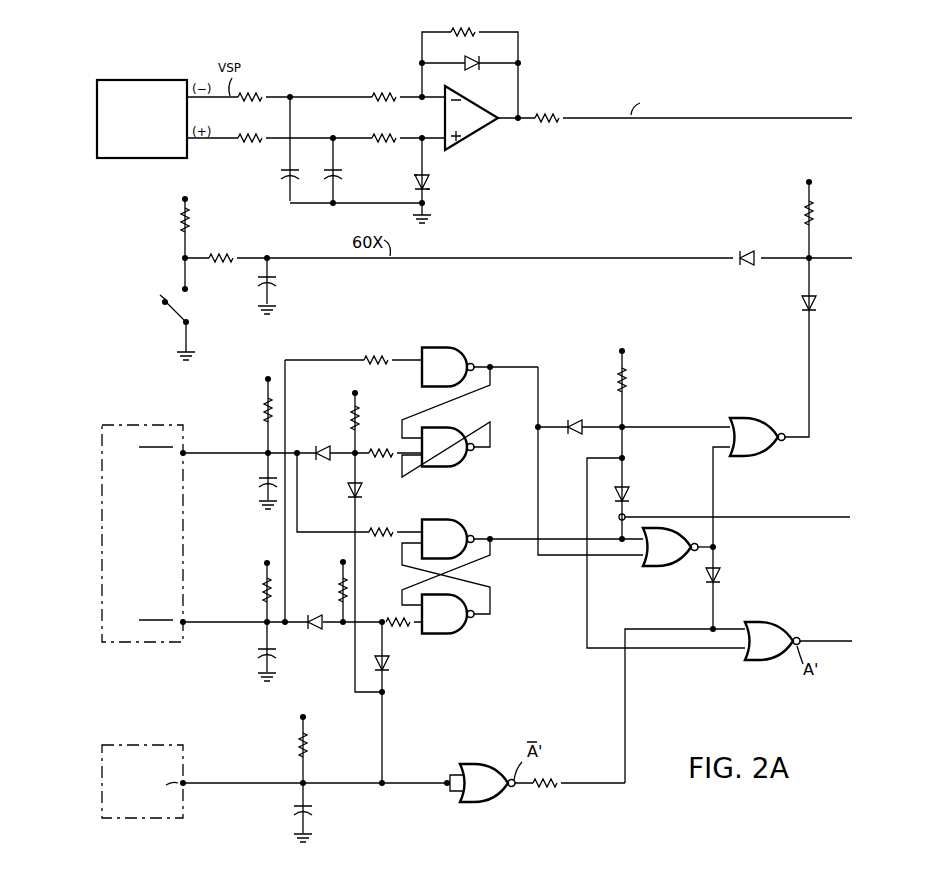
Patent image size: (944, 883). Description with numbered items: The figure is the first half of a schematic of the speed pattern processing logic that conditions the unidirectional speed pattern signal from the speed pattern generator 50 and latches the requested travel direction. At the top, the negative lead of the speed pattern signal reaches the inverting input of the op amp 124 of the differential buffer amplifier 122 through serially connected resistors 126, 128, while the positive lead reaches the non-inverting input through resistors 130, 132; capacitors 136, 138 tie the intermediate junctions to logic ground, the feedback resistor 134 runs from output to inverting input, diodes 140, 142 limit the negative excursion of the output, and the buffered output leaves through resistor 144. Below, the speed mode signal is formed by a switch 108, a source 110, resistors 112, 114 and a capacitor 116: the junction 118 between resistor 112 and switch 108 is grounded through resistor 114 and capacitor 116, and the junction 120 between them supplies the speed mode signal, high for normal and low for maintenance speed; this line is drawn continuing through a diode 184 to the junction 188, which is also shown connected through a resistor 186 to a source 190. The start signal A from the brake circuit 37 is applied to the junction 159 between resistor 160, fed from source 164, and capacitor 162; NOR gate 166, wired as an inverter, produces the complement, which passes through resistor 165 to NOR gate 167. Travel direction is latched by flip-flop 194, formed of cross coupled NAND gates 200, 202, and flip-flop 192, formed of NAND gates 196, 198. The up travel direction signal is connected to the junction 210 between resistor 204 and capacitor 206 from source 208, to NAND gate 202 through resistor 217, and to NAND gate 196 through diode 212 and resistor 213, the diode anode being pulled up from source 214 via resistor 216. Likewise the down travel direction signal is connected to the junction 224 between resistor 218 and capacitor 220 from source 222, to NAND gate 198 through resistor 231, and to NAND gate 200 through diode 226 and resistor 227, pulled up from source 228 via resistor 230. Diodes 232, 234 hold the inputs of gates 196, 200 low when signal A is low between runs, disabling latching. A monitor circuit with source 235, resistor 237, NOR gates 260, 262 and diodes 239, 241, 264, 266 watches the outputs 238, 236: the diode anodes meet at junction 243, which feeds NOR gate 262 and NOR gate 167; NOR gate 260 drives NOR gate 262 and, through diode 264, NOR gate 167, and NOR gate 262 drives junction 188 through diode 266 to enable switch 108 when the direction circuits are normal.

The brake circuit 37 is at (126, 840).
The speed pattern generator 50 is at (115, 80).
The switch 108 is at (170, 314).
The source of unidirectional potential 110 is at (184, 198).
The resistor 112 is at (190, 223).
The resistor 114 is at (222, 250).
The capacitor 116 is at (282, 284).
The junction 118 is at (183, 257).
The junction 120 is at (262, 256).
The differential buffer amplifier 122 is at (618, 86).
The operational amplifier 124 is at (476, 135).
The resistor 126 is at (248, 94).
The resistor 128 is at (401, 94).
The resistor 130 is at (252, 142).
The resistor 132 is at (404, 136).
The feedback resistor 134 is at (462, 25).
The capacitor 136 is at (283, 172).
The capacitor 138 is at (343, 170).
The diode 140 is at (431, 176).
The diode 142 is at (478, 68).
The resistor 144 is at (546, 113).
The junction 159 is at (299, 775).
The resistor 160 is at (312, 751).
The capacitor 162 is at (312, 814).
The source of unidirectional potential 164 is at (303, 717).
The resistor 165 is at (550, 792).
The NOR gate 166 is at (478, 808).
The NOR gate 167 is at (778, 627).
The diode 184 is at (752, 256).
The resistor 186 is at (815, 215).
The junction 188 is at (814, 265).
The supply terminal 190 is at (809, 182).
The flip-flop 192 is at (522, 581).
The flip-flop 194 is at (470, 402).
The NAND gate 196 is at (459, 646).
The NAND gate 198 is at (454, 520).
The NAND gate 200 is at (464, 461).
The NAND gate 202 is at (449, 348).
The resistor 204 is at (260, 588).
The capacitor 206 is at (256, 660).
The source of unidirectional potential 208 is at (267, 562).
The junction 210 is at (264, 622).
The diode 212 is at (317, 614).
The resistor 213 is at (396, 627).
The source of unidirectional potential 214 is at (343, 562).
The resistor 216 is at (342, 586).
The resistor 217 is at (375, 360).
The resistor 218 is at (262, 414).
The capacitor 220 is at (256, 478).
The source of unidirectional potential 222 is at (268, 376).
The junction 224 is at (262, 449).
The diode 226 is at (320, 446).
The resistor 227 is at (380, 454).
The source of unidirectional potential 228 is at (355, 390).
The resistor 230 is at (352, 411).
The resistor 231 is at (383, 531).
The diode 232 is at (389, 668).
The diode 234 is at (348, 489).
The source of unidirectional potential 235 is at (622, 351).
The output of flip-flop 192 236 is at (492, 539).
The resistor 237 is at (628, 381).
The output of flip-flop 194 238 is at (492, 365).
The diode 239 is at (576, 418).
The diode 241 is at (632, 492).
The junction 243 is at (629, 424).
The NOR gate 260 is at (668, 567).
The NOR gate 262 is at (746, 417).
The diode 264 is at (719, 572).
The diode 266 is at (822, 303).